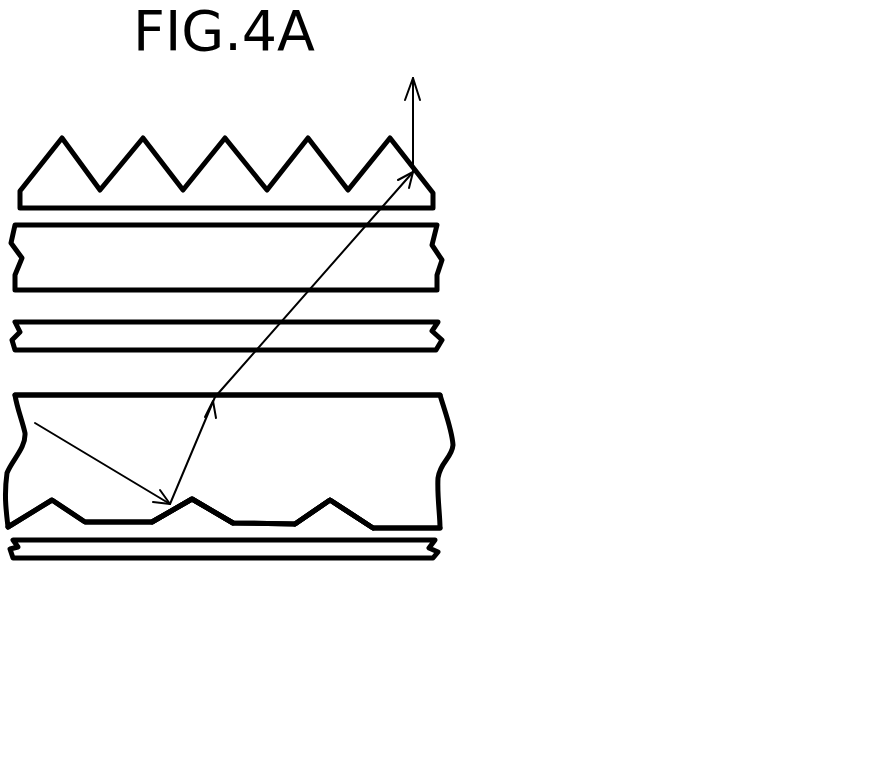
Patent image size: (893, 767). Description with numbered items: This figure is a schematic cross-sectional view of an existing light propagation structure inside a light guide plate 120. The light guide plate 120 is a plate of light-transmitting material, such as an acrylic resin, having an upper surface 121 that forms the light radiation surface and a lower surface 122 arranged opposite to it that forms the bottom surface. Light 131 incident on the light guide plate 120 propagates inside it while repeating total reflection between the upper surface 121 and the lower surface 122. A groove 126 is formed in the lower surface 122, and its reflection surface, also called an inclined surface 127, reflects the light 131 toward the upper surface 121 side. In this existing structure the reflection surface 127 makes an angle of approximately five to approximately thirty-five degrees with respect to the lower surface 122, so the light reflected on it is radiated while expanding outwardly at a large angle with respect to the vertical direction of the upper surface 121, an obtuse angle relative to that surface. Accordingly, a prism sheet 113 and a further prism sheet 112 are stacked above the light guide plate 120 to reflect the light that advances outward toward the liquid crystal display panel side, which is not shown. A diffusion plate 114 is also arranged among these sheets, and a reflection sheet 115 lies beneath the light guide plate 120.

The prism sheet 112 is at (438, 193).
The prism sheet 113 is at (440, 270).
The diffusion plate 114 is at (440, 340).
The reflection sheet 115 is at (437, 555).
The light guide plate 120 is at (294, 514).
The upper surface 121 is at (387, 393).
The lower surface 122 is at (445, 538).
The groove 126 is at (332, 527).
The reflection surface 127 is at (168, 503).
The light 131 is at (107, 468).